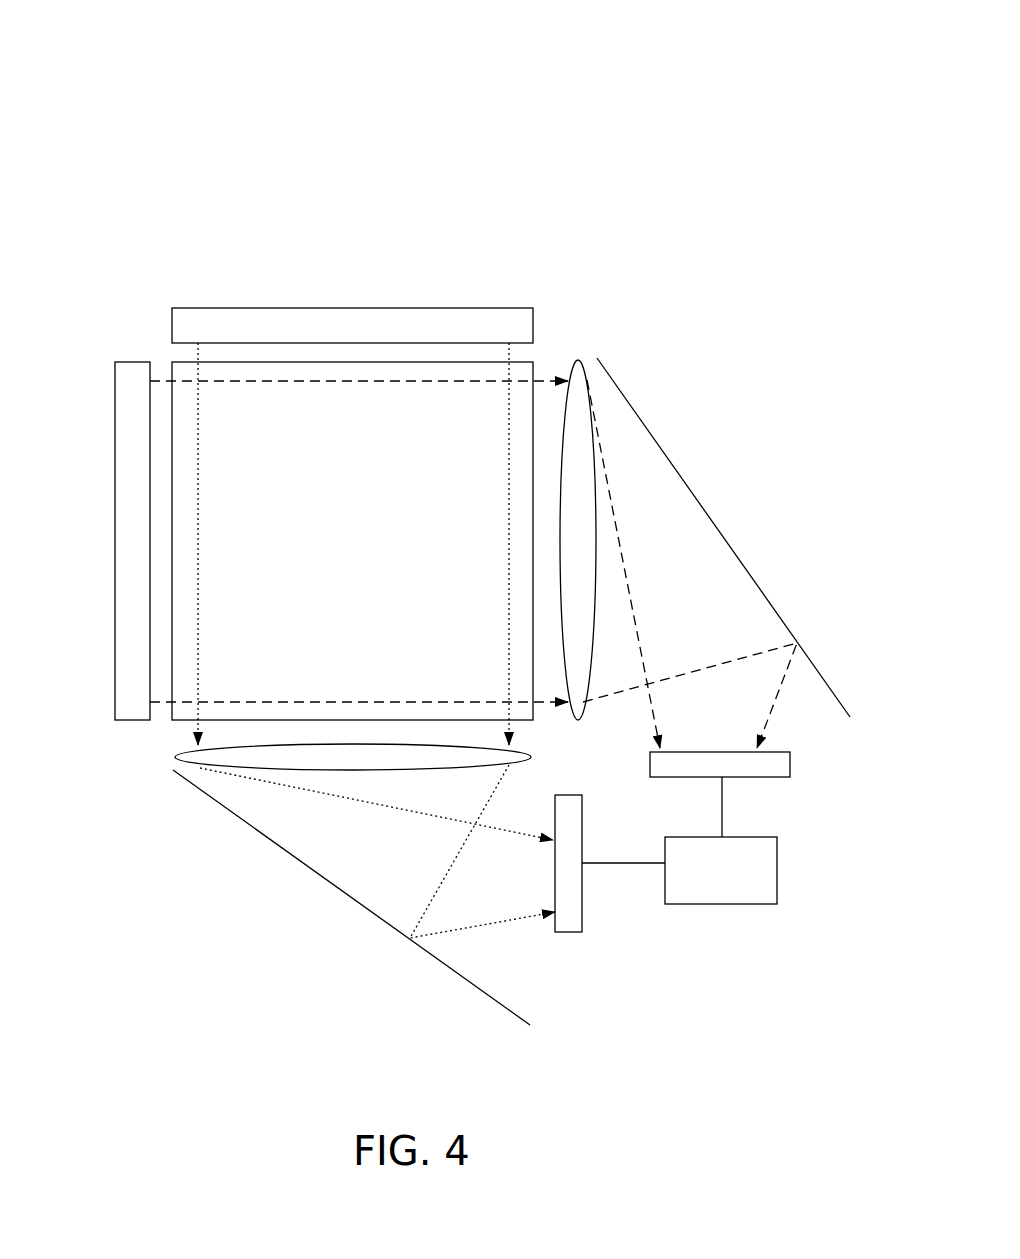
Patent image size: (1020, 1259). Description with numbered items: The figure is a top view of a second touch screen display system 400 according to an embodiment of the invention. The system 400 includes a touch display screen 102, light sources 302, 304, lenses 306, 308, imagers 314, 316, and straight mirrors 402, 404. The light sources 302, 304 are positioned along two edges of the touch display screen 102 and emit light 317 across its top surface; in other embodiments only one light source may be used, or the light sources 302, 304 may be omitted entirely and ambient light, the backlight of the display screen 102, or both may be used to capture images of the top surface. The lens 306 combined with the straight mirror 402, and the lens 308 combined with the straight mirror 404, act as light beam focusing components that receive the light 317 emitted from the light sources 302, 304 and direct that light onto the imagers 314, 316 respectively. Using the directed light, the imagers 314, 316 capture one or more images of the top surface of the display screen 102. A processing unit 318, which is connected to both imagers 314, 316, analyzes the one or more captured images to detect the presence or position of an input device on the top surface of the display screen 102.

The touch screen display system 400 is at (203, 145).
The light source 302 is at (353, 307).
The light source 304 is at (114, 541).
The touch display screen 102 is at (385, 578).
The light 317 is at (200, 470).
The lens 306 is at (578, 358).
The straight mirror 402 is at (732, 533).
The imager 314 is at (791, 763).
The processing unit 318 is at (744, 885).
The imager 316 is at (570, 934).
The lens 308 is at (172, 755).
The straight mirror 404 is at (305, 867).